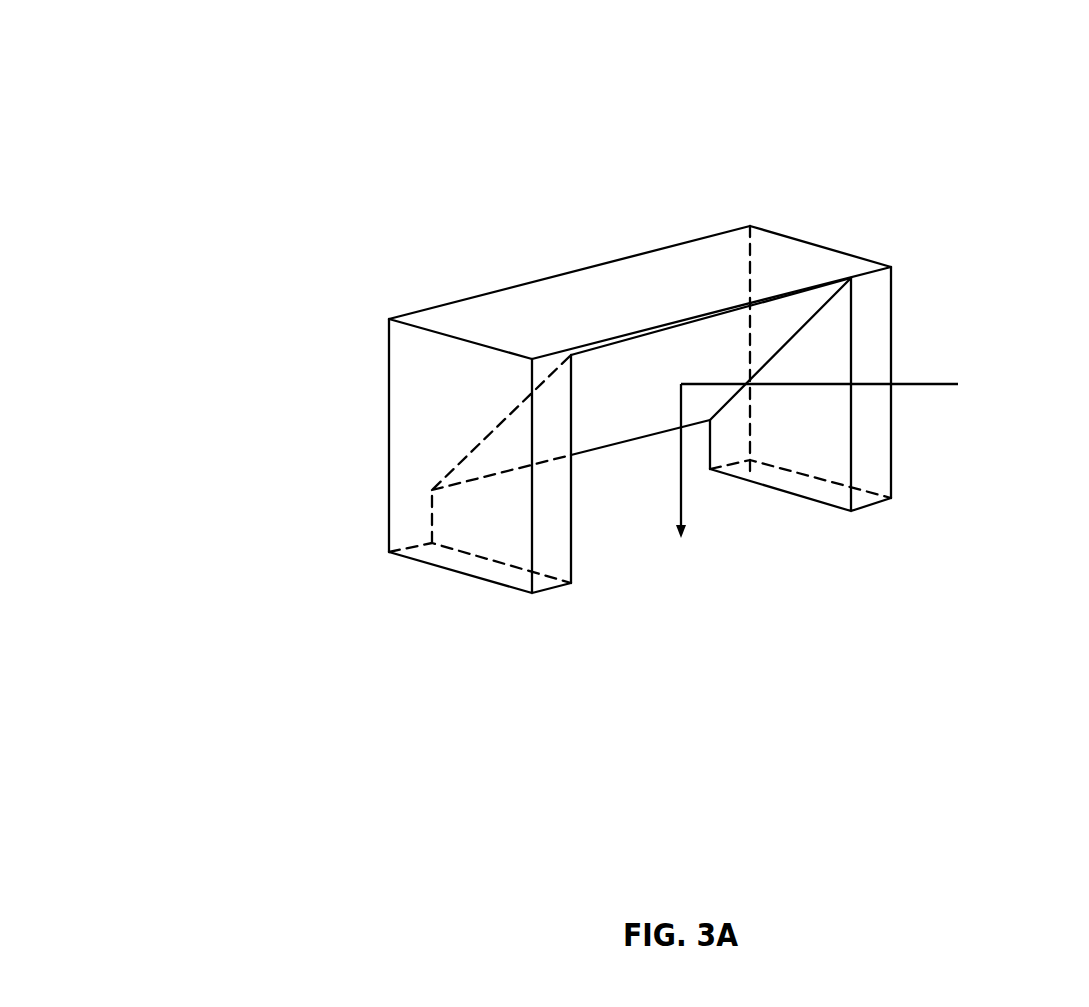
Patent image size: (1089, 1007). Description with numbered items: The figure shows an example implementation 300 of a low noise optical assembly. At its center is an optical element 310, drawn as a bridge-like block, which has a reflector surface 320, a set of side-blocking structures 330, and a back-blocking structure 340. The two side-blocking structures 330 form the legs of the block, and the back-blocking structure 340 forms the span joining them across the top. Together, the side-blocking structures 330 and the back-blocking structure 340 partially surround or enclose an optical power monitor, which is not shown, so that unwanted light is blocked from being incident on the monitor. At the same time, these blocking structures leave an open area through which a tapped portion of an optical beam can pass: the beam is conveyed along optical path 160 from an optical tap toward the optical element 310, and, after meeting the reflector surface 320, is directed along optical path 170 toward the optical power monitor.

The example implementation of a low noise optical assembly 300 is at (190, 52).
The optical element 310 is at (345, 275).
The back-blocking structure 340 is at (570, 258).
The side-blocking structures 330 is at (474, 590).
The reflector surface 320 is at (604, 433).
The optical path 160 is at (867, 394).
The optical path 170 is at (674, 477).